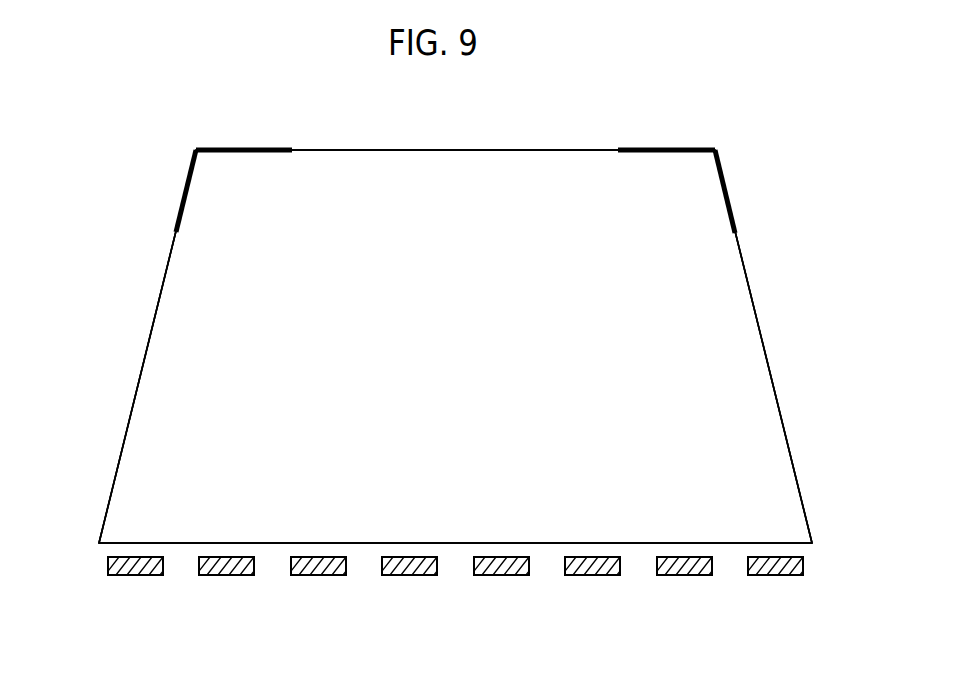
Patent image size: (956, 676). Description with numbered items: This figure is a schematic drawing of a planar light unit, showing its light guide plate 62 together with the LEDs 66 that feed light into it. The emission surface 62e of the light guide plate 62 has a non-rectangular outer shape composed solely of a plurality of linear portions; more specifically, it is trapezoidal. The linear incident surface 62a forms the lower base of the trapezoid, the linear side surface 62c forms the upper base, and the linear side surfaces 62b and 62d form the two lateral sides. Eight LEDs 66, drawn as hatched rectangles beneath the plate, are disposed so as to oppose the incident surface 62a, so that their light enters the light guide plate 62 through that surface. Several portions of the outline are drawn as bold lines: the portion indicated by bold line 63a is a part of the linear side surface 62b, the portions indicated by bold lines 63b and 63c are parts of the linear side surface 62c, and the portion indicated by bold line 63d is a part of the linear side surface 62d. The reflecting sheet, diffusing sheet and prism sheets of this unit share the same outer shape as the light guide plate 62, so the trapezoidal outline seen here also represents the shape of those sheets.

The light guide plate 62 is at (96, 255).
The linear incident surface 62a is at (268, 543).
The linear side surface 62b is at (137, 385).
The linear side surface 62c is at (458, 150).
The linear side surface 62d is at (762, 337).
The emission surface 62e is at (320, 250).
The bold line 63a is at (149, 190).
The bold line 63b is at (290, 140).
The bold line 63c is at (718, 140).
The bold line 63d is at (760, 189).
The LEDs 66 is at (415, 568).